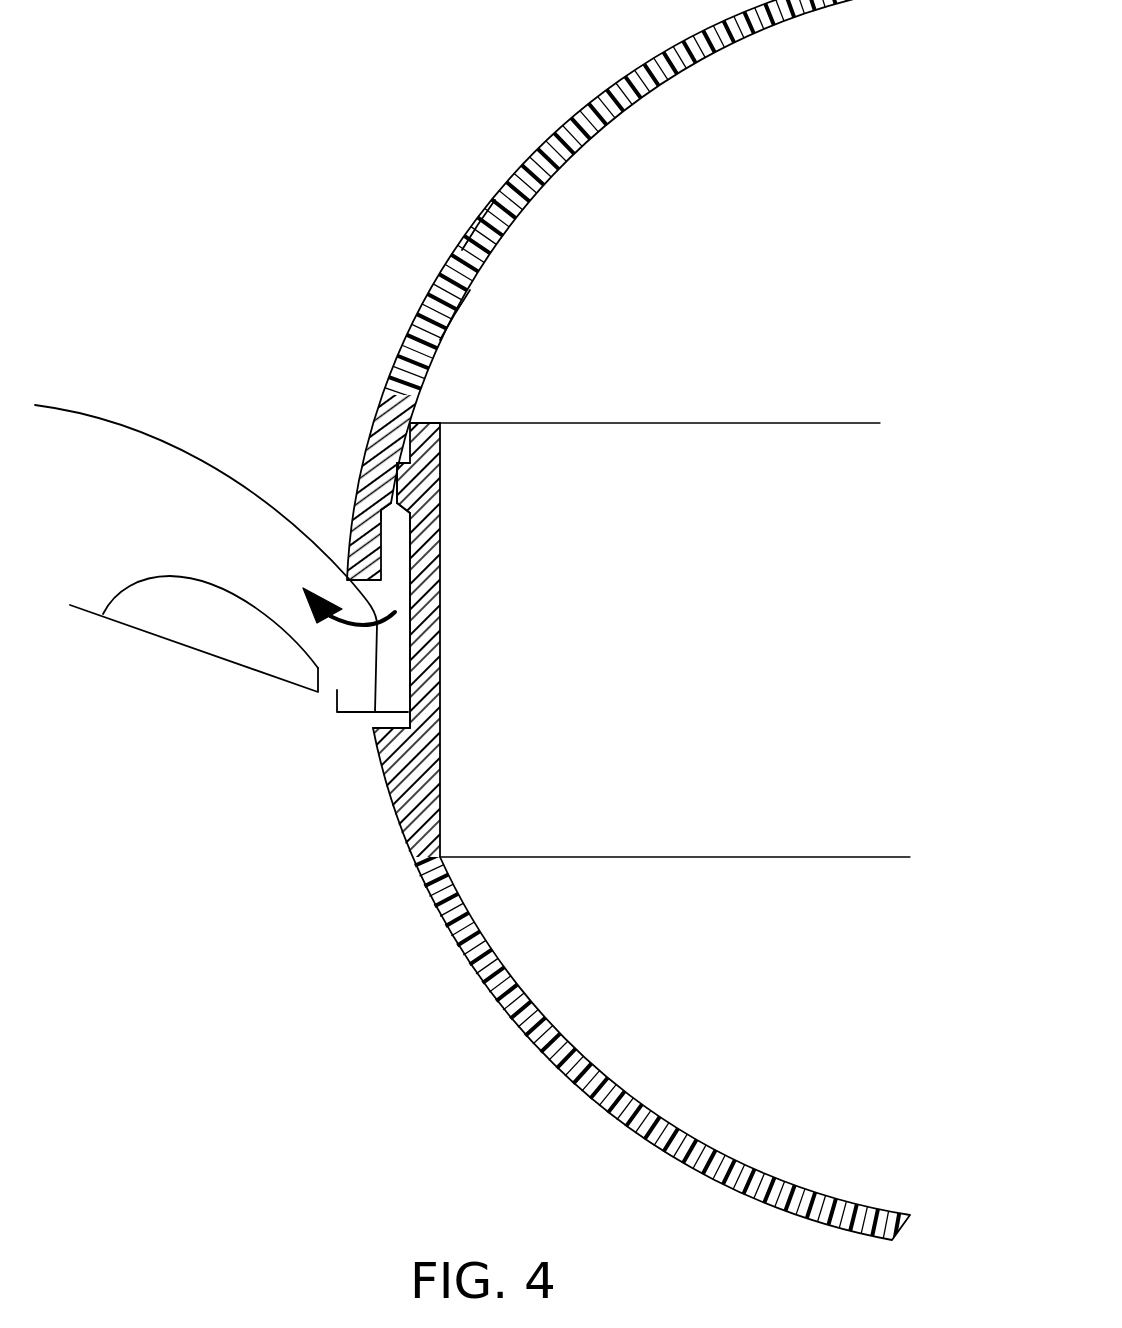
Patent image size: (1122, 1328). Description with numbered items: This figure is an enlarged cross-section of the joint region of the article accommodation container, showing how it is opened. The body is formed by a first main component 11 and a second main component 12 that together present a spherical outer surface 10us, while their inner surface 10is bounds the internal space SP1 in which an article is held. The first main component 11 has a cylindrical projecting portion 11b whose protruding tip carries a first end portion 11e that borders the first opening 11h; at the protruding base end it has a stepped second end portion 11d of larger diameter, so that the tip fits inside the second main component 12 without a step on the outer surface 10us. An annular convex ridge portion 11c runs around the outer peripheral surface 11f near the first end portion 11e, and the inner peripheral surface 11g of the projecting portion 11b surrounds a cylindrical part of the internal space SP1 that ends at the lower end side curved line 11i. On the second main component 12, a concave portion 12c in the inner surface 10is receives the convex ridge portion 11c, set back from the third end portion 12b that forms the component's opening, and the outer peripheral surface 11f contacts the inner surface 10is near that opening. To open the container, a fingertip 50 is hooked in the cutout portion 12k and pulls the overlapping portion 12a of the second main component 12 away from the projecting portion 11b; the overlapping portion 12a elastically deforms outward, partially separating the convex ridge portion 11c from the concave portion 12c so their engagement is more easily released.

The second main component 12 is at (574, 120).
The first main component 11 is at (590, 1108).
The outer surface 10us is at (487, 203).
The inner surface 10is is at (451, 325).
The first opening 11h is at (805, 423).
The lower end side curved line 11i is at (668, 858).
The first end portion 11e is at (405, 418).
The convex ridge portion 11c is at (397, 495).
The inner peripheral surface 11g is at (440, 527).
The projecting portion 11b is at (397, 643).
The outer peripheral surface 11f is at (440, 650).
The second end portion 11d is at (400, 728).
The overlapping portion 12a is at (352, 522).
The third end portion 12b is at (340, 715).
The concave portion 12c is at (384, 508).
The cutout portion 12k is at (366, 588).
The fingertip 50 is at (227, 667).
The internal space SP1 is at (830, 559).